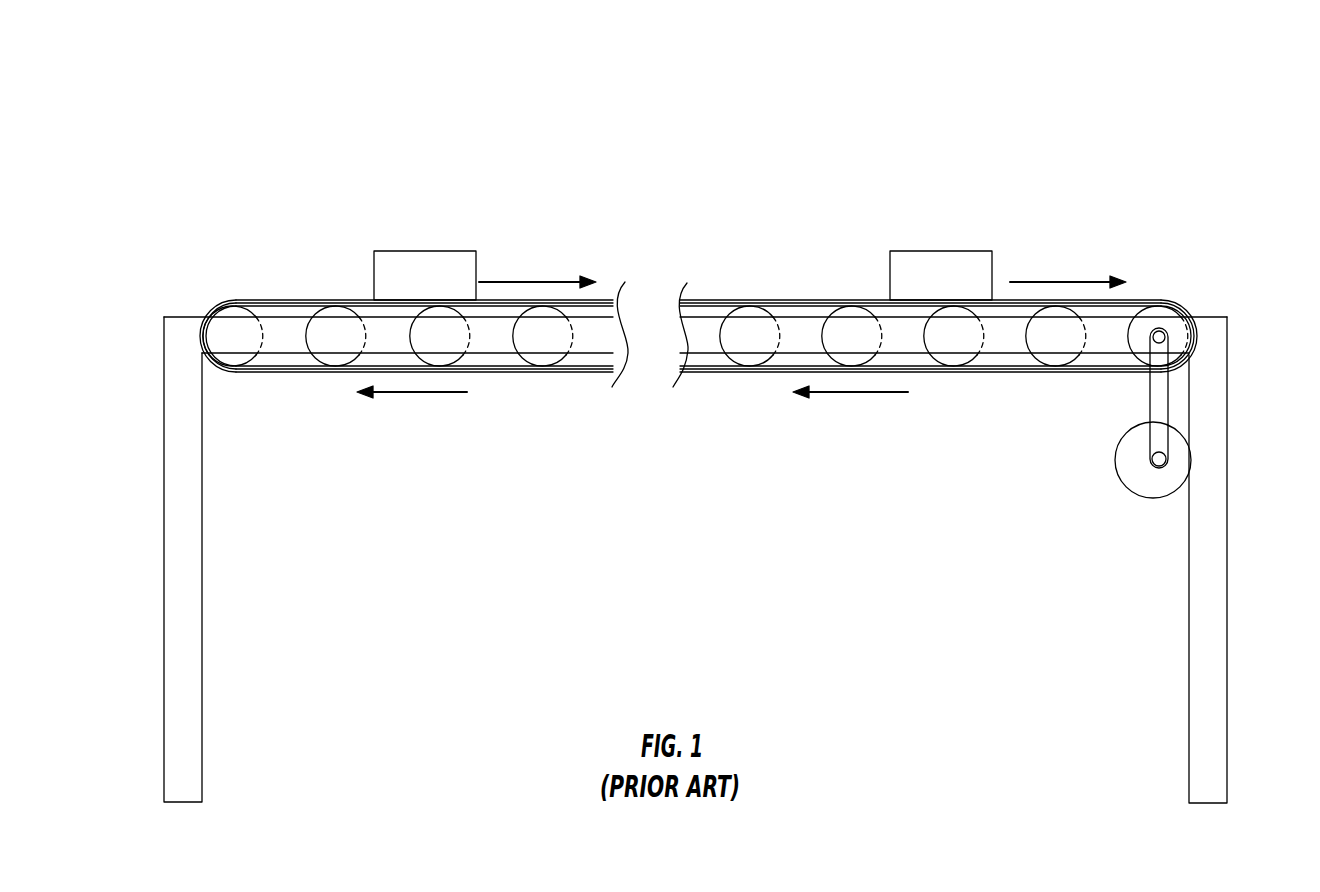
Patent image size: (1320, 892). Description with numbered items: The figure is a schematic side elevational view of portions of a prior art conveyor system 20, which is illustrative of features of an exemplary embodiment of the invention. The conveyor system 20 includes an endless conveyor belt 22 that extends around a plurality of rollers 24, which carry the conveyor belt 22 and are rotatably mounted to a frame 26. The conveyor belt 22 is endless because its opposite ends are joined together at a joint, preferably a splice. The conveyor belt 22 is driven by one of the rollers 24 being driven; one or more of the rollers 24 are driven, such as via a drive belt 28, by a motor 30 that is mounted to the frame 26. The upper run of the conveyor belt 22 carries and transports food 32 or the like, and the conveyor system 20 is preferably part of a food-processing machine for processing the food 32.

The conveyor system 20 is at (1098, 152).
The endless conveyor belt 22 is at (308, 299).
The rollers 24 is at (340, 367).
The frame 26 is at (162, 316).
The drive belt 28 is at (1168, 402).
The motor 30 is at (1163, 500).
The food 32 is at (425, 257).